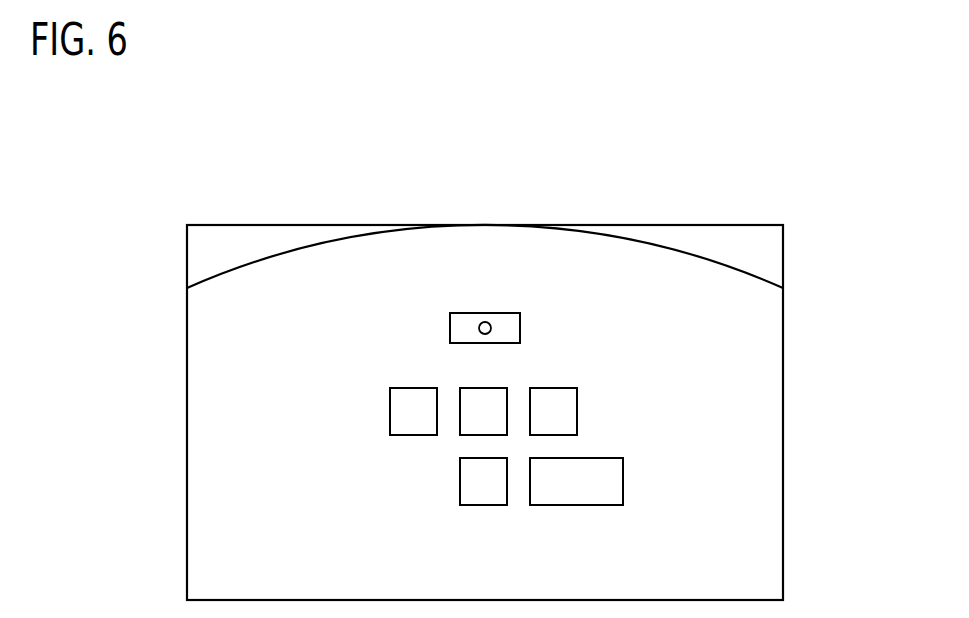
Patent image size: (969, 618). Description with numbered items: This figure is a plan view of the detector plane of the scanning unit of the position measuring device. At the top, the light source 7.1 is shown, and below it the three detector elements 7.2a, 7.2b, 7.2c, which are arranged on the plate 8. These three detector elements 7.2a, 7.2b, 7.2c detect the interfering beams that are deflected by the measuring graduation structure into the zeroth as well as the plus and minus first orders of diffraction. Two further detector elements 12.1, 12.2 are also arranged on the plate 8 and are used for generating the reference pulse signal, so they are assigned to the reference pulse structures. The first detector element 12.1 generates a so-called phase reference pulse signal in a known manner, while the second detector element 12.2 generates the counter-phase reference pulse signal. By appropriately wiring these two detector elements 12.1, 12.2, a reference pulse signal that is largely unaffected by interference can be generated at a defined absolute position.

The plate 8 is at (753, 483).
The light source 7.1 is at (470, 313).
The detector element 7.2a is at (403, 412).
The detector element 7.2b is at (558, 395).
The detector element 7.2c is at (470, 417).
The first detector element 12.1 is at (482, 500).
The second detector element 12.2 is at (582, 487).